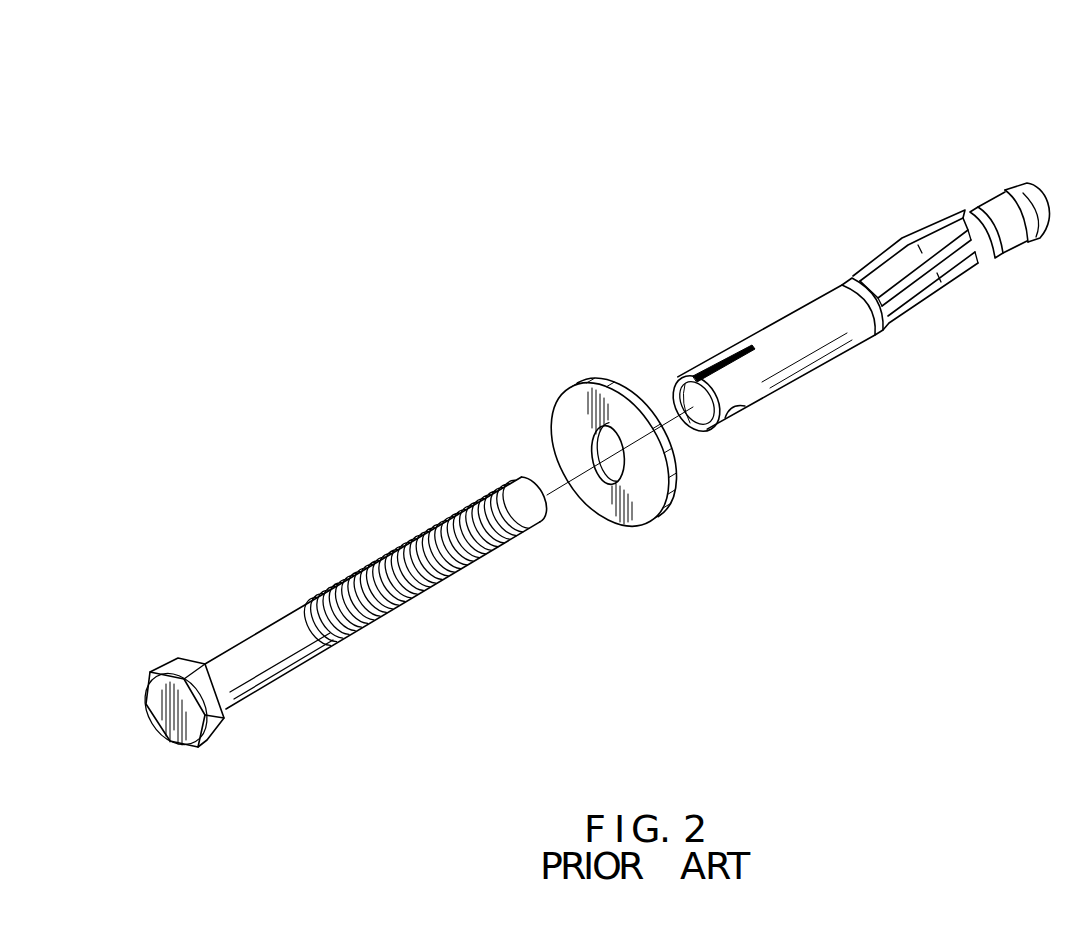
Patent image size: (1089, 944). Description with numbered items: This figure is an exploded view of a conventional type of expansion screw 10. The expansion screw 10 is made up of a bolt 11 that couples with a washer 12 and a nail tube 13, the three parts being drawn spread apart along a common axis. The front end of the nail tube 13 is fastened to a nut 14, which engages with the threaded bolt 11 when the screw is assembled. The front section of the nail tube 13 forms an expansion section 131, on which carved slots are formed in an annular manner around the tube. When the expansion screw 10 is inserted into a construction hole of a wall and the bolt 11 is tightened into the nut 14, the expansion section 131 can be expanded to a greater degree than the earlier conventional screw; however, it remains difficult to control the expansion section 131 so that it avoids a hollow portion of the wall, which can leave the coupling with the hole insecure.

The expansion screw 10 is at (687, 590).
The bolt 11 is at (372, 577).
The washer 12 is at (578, 400).
The nail tube 13 is at (813, 315).
The expansion section 131 is at (928, 275).
The nut 14 is at (1033, 197).